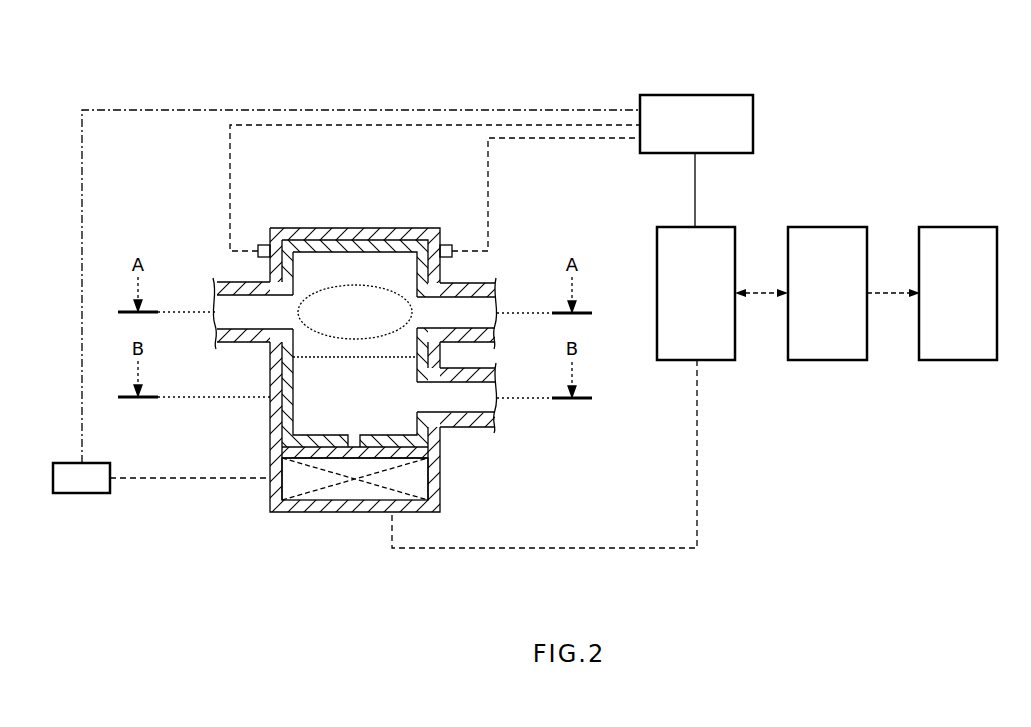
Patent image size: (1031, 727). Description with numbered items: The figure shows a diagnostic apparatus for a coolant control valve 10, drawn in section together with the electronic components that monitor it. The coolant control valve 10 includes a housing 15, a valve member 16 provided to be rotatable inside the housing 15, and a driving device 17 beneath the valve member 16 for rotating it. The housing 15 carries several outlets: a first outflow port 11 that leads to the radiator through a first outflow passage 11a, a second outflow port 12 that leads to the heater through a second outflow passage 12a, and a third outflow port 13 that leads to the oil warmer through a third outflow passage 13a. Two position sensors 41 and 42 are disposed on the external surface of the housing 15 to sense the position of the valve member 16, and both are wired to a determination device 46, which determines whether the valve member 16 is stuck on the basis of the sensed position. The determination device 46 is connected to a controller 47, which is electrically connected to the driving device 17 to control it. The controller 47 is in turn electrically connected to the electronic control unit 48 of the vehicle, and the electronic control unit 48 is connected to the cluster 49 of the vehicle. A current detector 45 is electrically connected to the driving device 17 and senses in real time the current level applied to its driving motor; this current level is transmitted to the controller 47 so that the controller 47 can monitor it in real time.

The coolant control valve 10 is at (414, 374).
The first outflow port 11 is at (492, 278).
The first outflow passage 11a is at (470, 283).
The second outflow port 12 is at (479, 426).
The second outflow passage 12a is at (462, 428).
The third outflow port 13 is at (216, 277).
The third outflow passage 13a is at (240, 283).
The housing 15 is at (370, 240).
The valve member 16 is at (333, 248).
The driving device 17 is at (355, 493).
The position sensor 41 is at (446, 245).
The position sensor 42 is at (264, 245).
The current detector 45 is at (80, 494).
The determination device 46 is at (693, 95).
The controller 47 is at (712, 227).
The electronic control unit (ECU) 48 is at (823, 227).
The cluster 49 is at (954, 227).